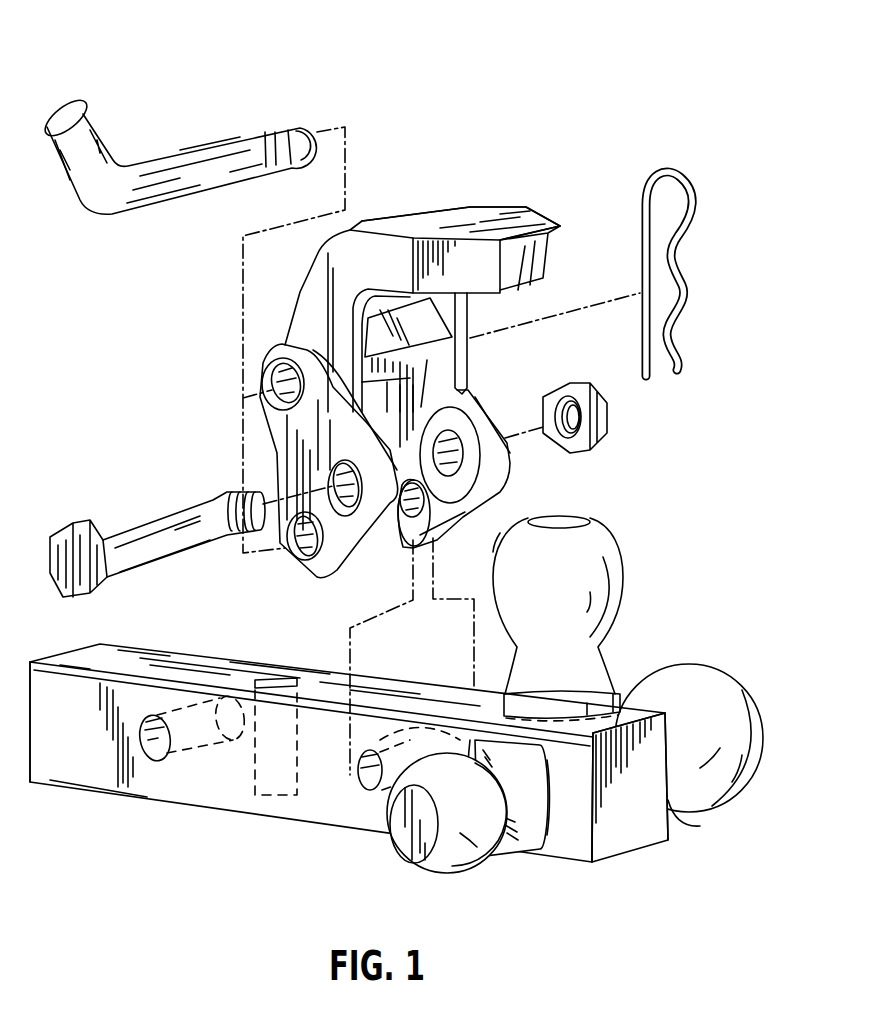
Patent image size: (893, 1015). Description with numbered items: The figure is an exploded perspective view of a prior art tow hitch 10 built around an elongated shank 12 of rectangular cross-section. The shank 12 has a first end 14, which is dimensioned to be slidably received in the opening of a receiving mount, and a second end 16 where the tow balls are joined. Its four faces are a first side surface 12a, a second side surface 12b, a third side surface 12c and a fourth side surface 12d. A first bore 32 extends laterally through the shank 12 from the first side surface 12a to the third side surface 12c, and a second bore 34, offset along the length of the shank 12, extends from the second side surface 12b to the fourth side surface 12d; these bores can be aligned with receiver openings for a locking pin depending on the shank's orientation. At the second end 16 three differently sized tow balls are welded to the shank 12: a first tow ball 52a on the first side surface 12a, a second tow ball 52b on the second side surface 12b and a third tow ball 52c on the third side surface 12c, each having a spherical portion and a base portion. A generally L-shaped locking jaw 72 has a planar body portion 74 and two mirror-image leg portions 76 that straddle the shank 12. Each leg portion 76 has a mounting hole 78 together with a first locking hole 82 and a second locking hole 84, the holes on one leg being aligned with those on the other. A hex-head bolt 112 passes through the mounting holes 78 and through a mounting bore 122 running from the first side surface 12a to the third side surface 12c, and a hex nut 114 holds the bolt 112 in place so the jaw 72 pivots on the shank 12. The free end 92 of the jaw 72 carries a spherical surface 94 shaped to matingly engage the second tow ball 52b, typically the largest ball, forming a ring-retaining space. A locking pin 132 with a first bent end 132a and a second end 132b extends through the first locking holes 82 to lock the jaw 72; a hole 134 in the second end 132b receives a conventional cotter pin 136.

The tow hitch 10 is at (545, 76).
The shank 12 is at (374, 760).
The first side surface 12a is at (210, 792).
The second side surface 12b is at (137, 658).
The third side surface 12c is at (681, 818).
The fourth side surface 12d is at (622, 862).
The first end 14 is at (40, 772).
The second end 16 is at (582, 852).
The first bore 32 is at (158, 757).
The second bore 34 is at (278, 680).
The first tow ball 52a is at (455, 870).
The second tow ball 52b is at (592, 553).
The third tow ball 52c is at (698, 680).
The locking jaw 72 is at (468, 206).
The body portion 74 is at (508, 226).
The leg portions 76 is at (280, 463).
The mounting hole 78 is at (346, 506).
The first locking hole 82 is at (282, 368).
The second locking hole 84 is at (300, 548).
The free end 92 is at (556, 225).
The surface 94 is at (536, 262).
The hex-head bolt 112 is at (140, 526).
The hex nut 114 is at (607, 432).
The mounting bore 122 is at (368, 785).
The locking pin 132 is at (173, 158).
The first bent end 132a is at (68, 152).
The second end 132b is at (303, 137).
The hole 134 is at (273, 128).
The cotter pin 136 is at (683, 190).